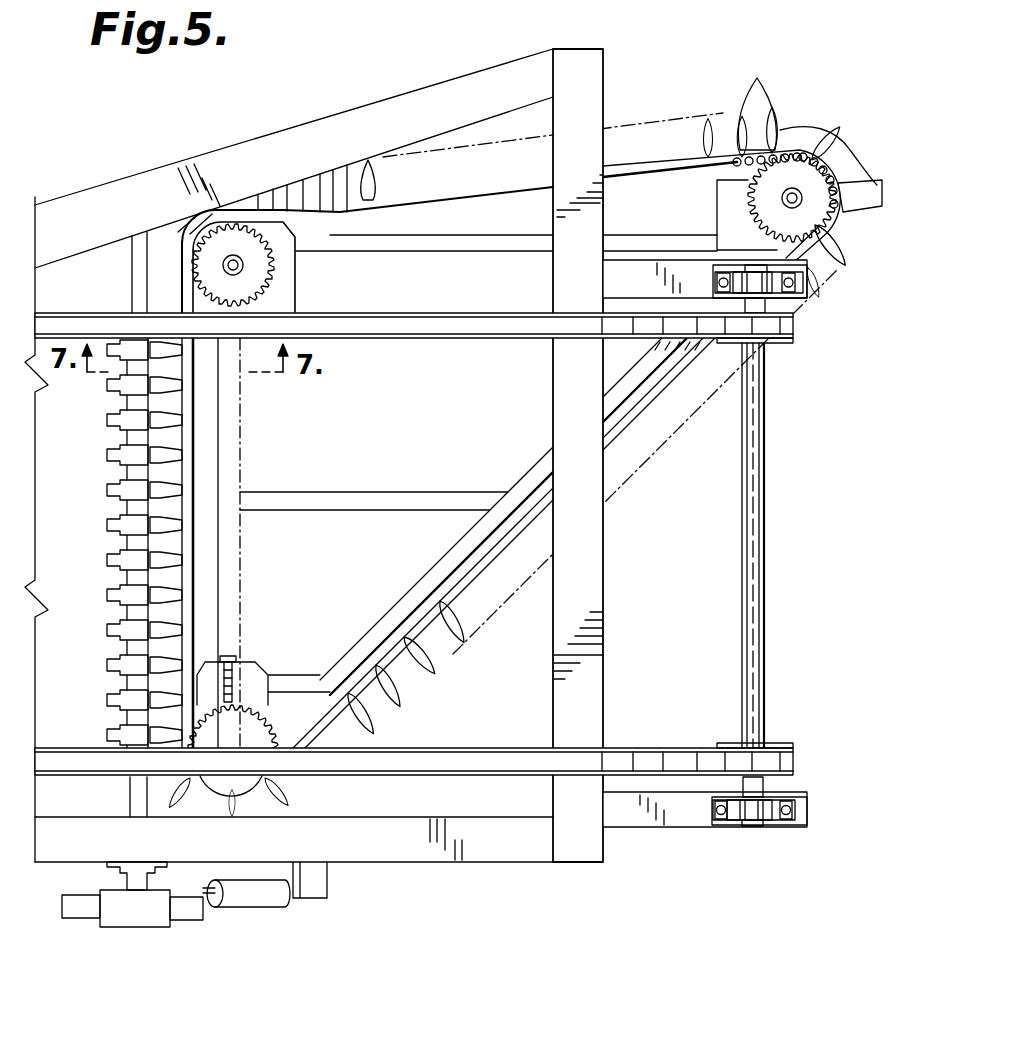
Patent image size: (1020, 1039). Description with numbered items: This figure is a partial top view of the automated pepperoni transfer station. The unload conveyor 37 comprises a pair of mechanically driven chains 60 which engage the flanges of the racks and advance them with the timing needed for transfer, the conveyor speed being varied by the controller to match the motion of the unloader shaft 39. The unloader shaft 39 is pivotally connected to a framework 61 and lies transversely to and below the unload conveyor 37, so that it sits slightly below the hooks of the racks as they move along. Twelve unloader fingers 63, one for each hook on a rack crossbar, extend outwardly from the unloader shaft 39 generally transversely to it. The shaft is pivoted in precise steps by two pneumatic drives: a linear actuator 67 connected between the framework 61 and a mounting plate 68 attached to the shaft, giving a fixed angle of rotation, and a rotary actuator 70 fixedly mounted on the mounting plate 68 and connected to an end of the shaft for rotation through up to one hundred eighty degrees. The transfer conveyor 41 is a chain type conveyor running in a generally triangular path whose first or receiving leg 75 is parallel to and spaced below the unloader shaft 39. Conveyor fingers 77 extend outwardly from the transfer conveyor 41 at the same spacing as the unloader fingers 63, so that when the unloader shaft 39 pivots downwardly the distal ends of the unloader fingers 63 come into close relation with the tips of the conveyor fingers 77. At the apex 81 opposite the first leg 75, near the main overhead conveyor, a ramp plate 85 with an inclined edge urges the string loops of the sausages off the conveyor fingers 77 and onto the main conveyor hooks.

The unload conveyor 37 is at (766, 460).
The unloader shaft 39 is at (127, 802).
The transfer conveyor 41 is at (632, 165).
The mechanically driven chains 60 is at (795, 320).
The framework 61 is at (518, 862).
The unloader fingers 63 is at (107, 490).
The linear actuator 67 is at (262, 907).
The mounting plate 68 is at (122, 892).
The rotary actuator 70 is at (160, 927).
The first or receiving leg 75 is at (197, 462).
The conveyor fingers 77 is at (180, 625).
The apex 81 is at (838, 226).
The ramp plate 85 is at (853, 150).